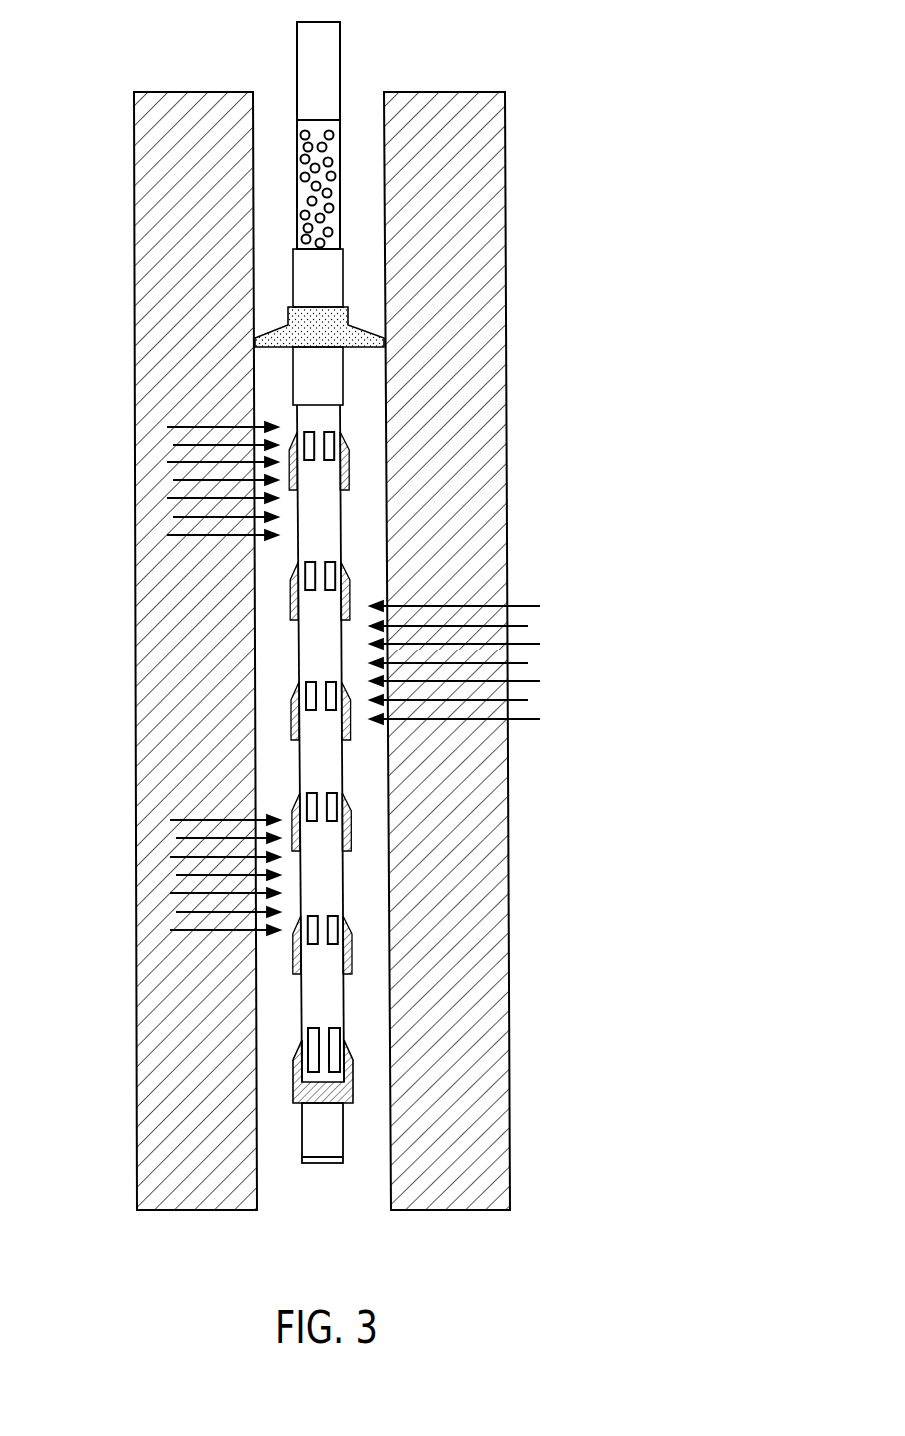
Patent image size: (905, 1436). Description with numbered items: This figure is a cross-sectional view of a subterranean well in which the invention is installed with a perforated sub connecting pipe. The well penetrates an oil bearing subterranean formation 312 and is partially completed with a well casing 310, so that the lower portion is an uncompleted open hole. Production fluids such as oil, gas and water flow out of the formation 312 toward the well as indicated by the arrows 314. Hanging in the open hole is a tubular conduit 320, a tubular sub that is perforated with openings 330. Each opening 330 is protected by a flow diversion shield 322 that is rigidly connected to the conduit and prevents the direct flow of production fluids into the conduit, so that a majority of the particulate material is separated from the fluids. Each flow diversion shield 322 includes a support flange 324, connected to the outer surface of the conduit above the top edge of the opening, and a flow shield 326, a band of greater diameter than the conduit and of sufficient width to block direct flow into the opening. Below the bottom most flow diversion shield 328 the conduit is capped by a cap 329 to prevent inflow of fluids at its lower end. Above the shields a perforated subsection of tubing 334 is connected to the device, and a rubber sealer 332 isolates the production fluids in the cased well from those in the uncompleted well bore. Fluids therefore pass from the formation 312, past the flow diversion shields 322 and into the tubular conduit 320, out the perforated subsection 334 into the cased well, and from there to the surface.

The well casing 310 is at (272, 135).
The oil bearing subterranean formation 312 is at (151, 628).
The arrows 314 is at (349, 651).
The tubular conduit 320 is at (459, 743).
The flow diversion shield 322 is at (194, 718).
The support flange 324 is at (193, 571).
The flow shield 326 is at (186, 577).
The bottom most flow diversion shield 328 is at (458, 1080).
The cap 329 is at (430, 1182).
The opening 330 is at (464, 499).
The rubber sealer 332 is at (427, 327).
The perforated subsection of tubing 334 is at (379, 151).